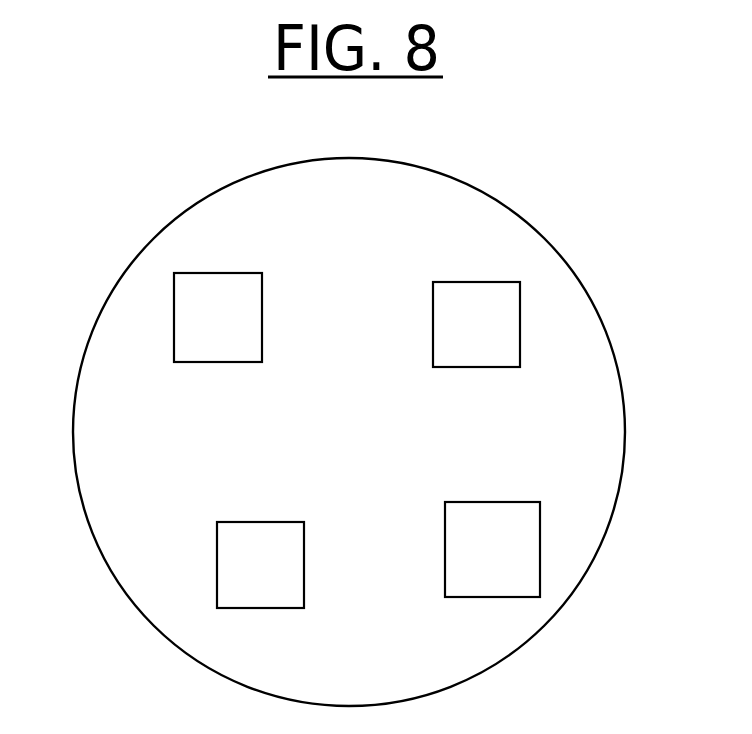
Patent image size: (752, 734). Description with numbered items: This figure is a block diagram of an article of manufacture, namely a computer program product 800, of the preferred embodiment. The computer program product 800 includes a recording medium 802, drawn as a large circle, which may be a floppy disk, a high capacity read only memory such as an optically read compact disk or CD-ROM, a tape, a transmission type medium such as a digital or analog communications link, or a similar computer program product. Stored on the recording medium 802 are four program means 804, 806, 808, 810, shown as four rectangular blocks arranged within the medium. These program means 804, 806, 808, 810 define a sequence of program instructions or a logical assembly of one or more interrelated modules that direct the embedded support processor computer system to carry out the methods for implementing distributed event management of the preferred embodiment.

The computer program product 800 is at (360, 432).
The recording medium 802 is at (114, 273).
The program means 804 is at (260, 565).
The program means 806 is at (492, 549).
The program means 808 is at (476, 324).
The program means 810 is at (218, 317).